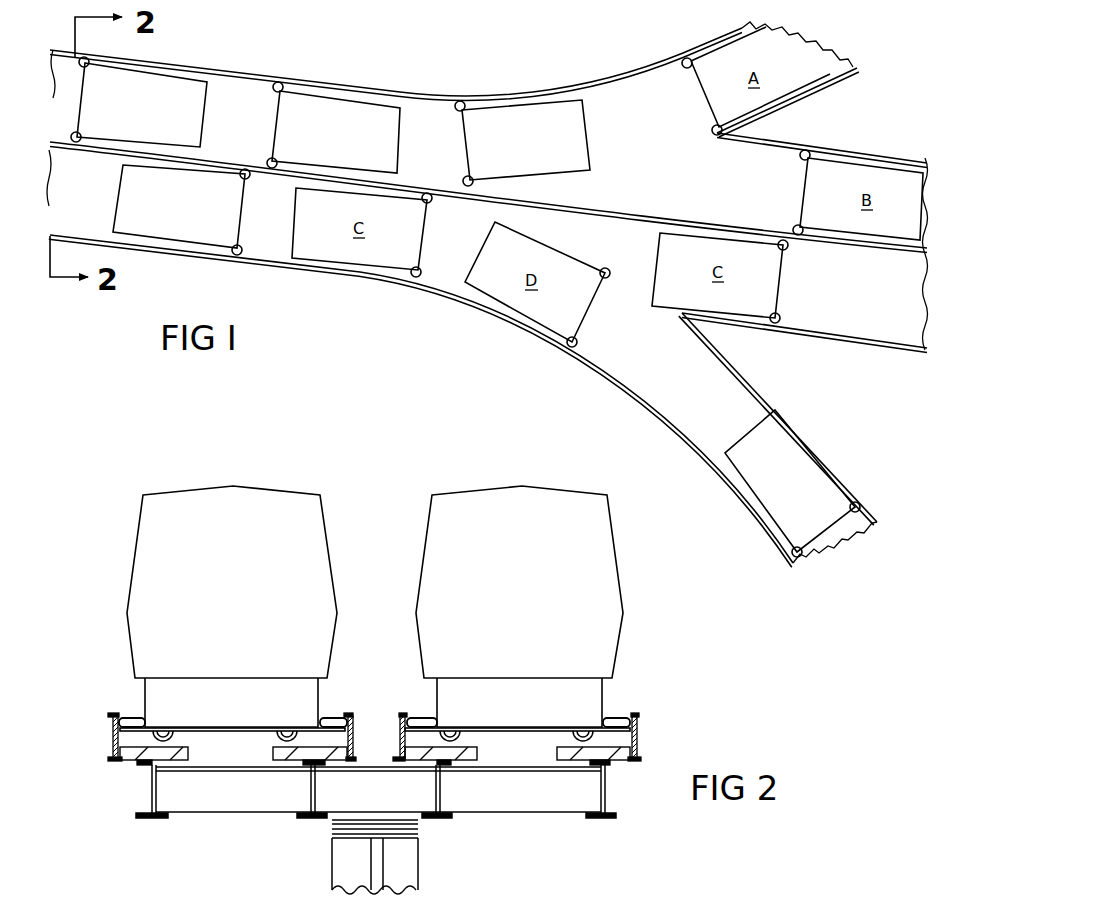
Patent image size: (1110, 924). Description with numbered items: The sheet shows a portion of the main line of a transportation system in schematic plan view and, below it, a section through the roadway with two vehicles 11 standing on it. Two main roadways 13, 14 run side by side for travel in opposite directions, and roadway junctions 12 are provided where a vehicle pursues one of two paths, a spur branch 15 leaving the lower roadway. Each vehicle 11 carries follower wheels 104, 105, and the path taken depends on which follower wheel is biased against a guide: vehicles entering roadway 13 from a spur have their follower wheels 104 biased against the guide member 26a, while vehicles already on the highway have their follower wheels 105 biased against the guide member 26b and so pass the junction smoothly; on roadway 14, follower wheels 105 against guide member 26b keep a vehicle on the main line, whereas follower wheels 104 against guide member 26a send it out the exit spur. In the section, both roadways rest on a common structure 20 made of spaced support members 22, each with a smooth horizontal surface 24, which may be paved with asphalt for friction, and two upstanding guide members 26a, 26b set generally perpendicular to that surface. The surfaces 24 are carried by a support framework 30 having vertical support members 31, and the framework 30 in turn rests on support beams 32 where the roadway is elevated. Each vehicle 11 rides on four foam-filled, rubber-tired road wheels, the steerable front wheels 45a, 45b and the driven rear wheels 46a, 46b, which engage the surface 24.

In FIG. 1, the vehicle 11 is at (152, 116).
In FIG. 1, the roadway junction 12 is at (790, 128).
In FIG. 1, the main roadway 13 is at (250, 80).
In FIG. 1, the main roadway 14 is at (282, 255).
In FIG. 1, the curved branch track 15 is at (724, 331).
In FIG. 2, the common structure 20 is at (114, 769).
In FIG. 2, the support member 22 is at (272, 753).
In FIG. 2, the smooth horizontal surface 24 is at (282, 740).
In FIG. 1, the guide member 26a is at (380, 90).
In FIG. 2, the guide member 26a is at (112, 718).
In FIG. 1, the guide member 26b is at (288, 180).
In FIG. 2, the guide member 26b is at (400, 730).
In FIG. 2, the support framework 30 is at (510, 820).
In FIG. 2, the vertical support member 31 is at (158, 798).
In FIG. 2, the support beam 32 is at (419, 872).
In FIG. 2, the front road wheel 45a is at (165, 728).
In FIG. 2, the front road wheel 45b is at (288, 728).
In FIG. 2, the rear road wheel 46a is at (582, 728).
In FIG. 2, the rear road wheel 46b is at (452, 728).
In FIG. 1, the follower wheel 104 is at (86, 57).
In FIG. 2, the follower wheel 104 is at (122, 717).
In FIG. 1, the follower wheel 105 is at (76, 143).
In FIG. 2, the follower wheel 105 is at (340, 717).